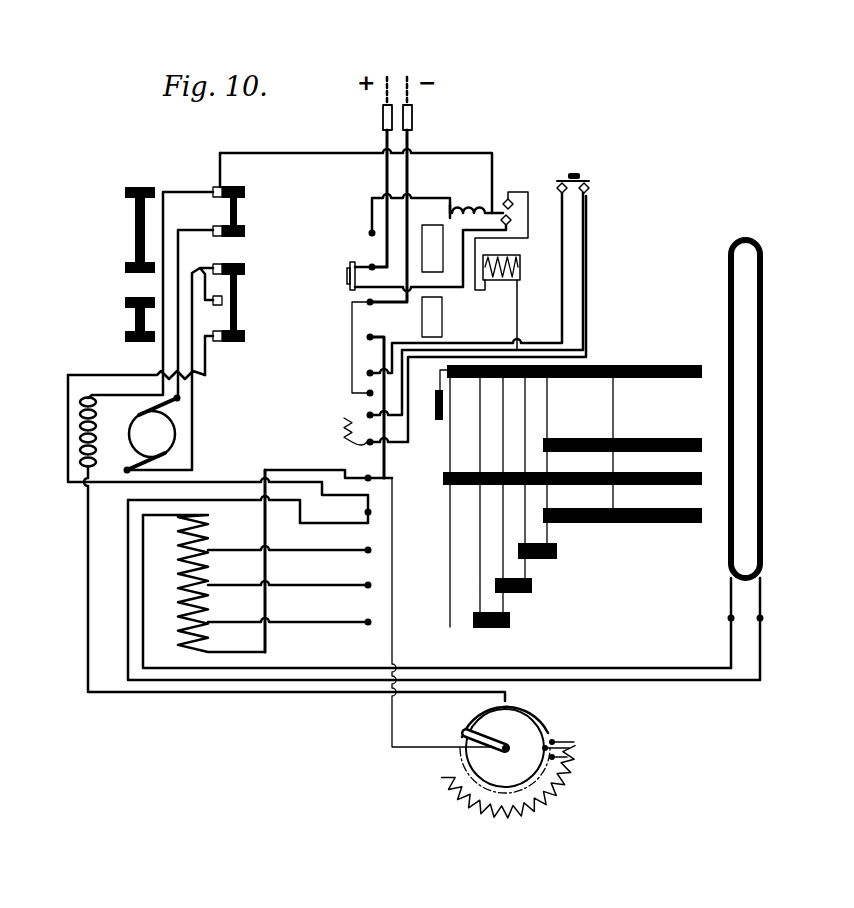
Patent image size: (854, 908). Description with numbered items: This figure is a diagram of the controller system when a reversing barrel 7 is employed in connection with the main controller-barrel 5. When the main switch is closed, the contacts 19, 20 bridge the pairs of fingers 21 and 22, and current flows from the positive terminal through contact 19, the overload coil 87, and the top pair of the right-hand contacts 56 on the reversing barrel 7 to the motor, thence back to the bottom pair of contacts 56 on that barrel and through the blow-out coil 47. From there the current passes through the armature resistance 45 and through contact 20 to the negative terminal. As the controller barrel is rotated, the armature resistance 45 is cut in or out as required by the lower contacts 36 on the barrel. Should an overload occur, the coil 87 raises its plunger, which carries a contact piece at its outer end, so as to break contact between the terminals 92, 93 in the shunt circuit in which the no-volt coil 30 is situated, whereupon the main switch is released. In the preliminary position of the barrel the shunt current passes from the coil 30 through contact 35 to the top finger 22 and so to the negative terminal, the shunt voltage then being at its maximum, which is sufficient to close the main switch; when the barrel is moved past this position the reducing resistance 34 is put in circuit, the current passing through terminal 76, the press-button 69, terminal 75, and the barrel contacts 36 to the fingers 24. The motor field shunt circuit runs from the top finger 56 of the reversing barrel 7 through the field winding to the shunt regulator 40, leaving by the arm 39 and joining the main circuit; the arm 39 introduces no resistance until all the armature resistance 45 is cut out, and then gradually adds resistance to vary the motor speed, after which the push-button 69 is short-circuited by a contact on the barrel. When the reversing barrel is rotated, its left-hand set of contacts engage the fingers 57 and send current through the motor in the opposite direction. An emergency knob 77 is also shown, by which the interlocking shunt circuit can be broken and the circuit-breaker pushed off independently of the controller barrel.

The main controller-barrel 5 is at (617, 358).
The reversing barrel 7 is at (180, 177).
The contact 19 is at (392, 276).
The contact 20 is at (435, 320).
The pair of fingers 21 is at (369, 267).
The pair of fingers 22 is at (367, 337).
The fingers 24 is at (367, 415).
The no-volt coil 30 is at (520, 258).
The reducing resistance 34 is at (343, 432).
The contact 35 is at (438, 420).
The lower contacts 36 is at (702, 380).
The arm 39 is at (490, 741).
The shunt regulator 40 is at (560, 792).
The armature resistance 45 is at (186, 610).
The blow-out coil 47 is at (728, 290).
The right-hand contacts 56 is at (246, 231).
The fingers 57 is at (125, 334).
The push-button 69 is at (581, 174).
The terminal 75 is at (560, 183).
The terminal 76 is at (590, 188).
The emergency knob 77 is at (347, 278).
The overload coil 87 is at (463, 205).
The terminal 92 is at (508, 199).
The terminal 93 is at (512, 221).